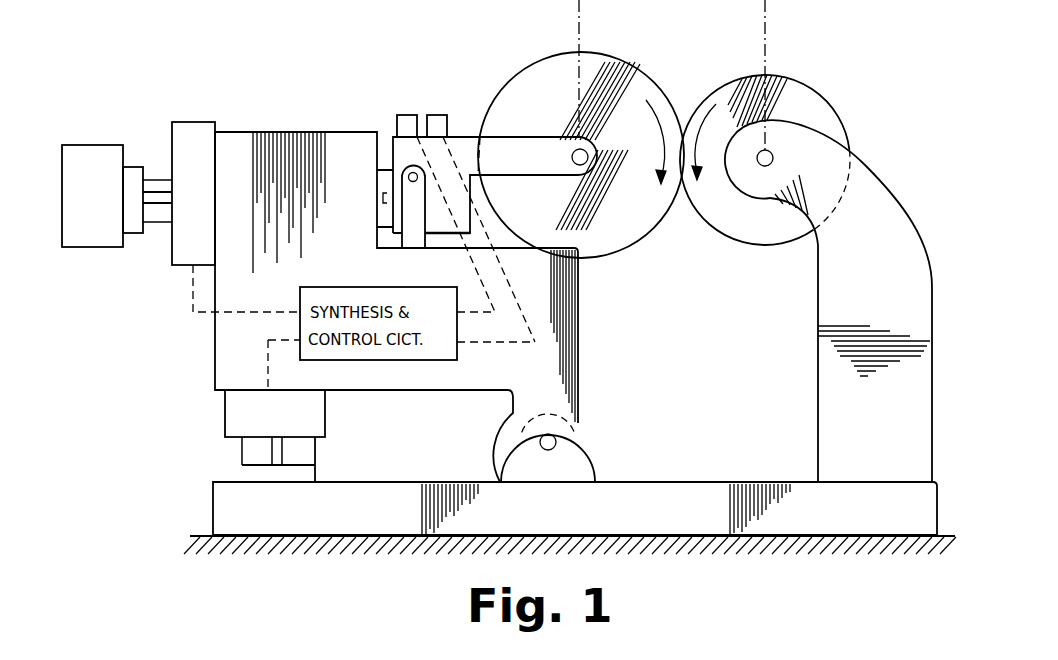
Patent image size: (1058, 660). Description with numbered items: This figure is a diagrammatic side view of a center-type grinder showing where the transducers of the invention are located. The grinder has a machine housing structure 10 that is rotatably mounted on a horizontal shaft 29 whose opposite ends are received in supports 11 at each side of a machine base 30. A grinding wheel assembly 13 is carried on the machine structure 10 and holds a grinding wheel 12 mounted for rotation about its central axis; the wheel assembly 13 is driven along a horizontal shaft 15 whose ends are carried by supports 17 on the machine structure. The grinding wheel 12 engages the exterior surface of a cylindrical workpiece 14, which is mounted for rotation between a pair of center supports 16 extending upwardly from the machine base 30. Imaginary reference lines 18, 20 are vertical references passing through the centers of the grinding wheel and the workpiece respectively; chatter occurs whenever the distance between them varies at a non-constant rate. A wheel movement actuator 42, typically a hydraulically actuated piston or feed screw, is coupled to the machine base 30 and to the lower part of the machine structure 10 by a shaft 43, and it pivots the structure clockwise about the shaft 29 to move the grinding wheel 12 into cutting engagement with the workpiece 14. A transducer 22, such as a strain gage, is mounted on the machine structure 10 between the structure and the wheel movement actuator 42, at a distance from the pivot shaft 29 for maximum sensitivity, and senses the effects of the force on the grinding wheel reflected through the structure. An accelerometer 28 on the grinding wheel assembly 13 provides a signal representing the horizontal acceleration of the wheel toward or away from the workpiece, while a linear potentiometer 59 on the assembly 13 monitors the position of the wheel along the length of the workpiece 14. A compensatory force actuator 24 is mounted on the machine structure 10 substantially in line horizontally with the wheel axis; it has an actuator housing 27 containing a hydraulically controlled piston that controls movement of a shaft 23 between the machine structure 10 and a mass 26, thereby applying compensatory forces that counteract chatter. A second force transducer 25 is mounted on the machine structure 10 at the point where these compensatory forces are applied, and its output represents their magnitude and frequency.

The machine housing structure 10 is at (213, 382).
The supports 11 is at (585, 462).
The grinding wheel 12 is at (640, 78).
The grinding wheel assembly 13 is at (467, 108).
The cylindrical workpiece 14 is at (808, 92).
The horizontal shaft 15 is at (411, 172).
The center supports 16 is at (848, 405).
The supports 17 is at (415, 235).
The imaginary reference line 18 is at (578, 35).
The imaginary reference line 20 is at (768, 22).
The transducer 22 is at (325, 415).
The shaft 23 is at (160, 205).
The compensatory force actuator 24 is at (155, 164).
The second force transducer 25 is at (206, 122).
The mass 26 is at (98, 143).
The actuator housing 27 is at (133, 178).
The accelerometer 28 is at (437, 115).
The horizontal shaft 29 is at (556, 441).
The machine base 30 is at (673, 493).
The wheel movement actuator 42 is at (252, 470).
The shaft 43 is at (283, 449).
The linear potentiometer 59 is at (407, 115).